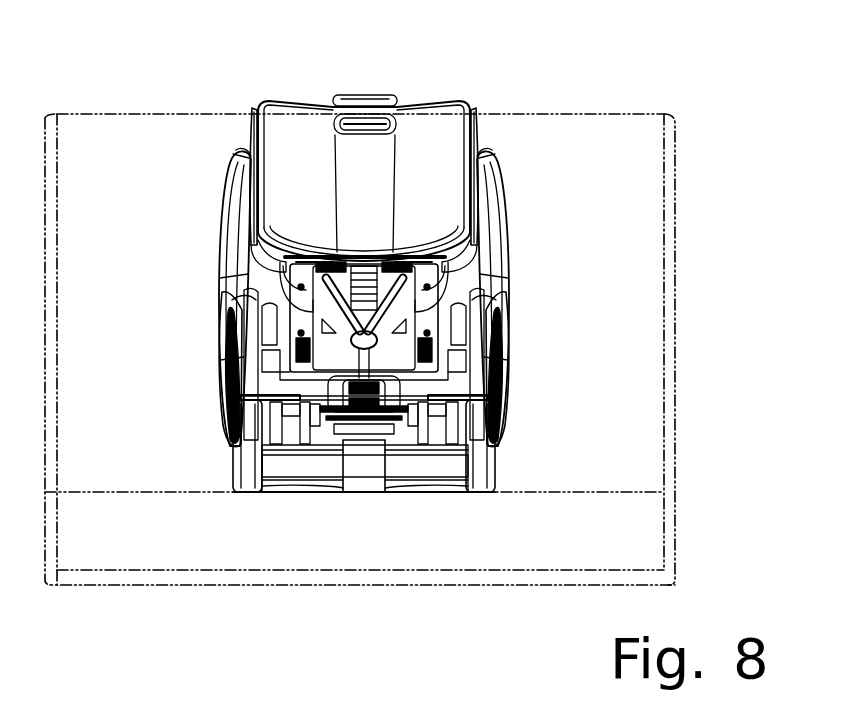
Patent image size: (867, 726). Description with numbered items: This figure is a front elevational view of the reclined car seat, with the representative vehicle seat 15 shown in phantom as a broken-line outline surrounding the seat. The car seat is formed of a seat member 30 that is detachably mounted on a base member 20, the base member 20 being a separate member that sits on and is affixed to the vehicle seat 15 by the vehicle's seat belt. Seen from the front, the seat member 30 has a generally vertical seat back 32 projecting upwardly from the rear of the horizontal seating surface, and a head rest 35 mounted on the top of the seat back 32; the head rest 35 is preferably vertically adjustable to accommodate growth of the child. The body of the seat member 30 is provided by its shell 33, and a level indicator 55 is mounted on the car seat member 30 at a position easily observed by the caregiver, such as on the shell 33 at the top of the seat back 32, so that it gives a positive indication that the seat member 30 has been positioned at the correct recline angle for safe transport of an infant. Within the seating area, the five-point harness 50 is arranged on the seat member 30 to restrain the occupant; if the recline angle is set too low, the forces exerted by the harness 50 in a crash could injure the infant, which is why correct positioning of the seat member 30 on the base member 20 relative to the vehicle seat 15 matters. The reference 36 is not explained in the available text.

The vehicle seat 15 is at (675, 325).
The base member 20 is at (495, 468).
The seat member 30 is at (217, 312).
The seat back 32 is at (403, 295).
The shell 33 is at (223, 187).
The head rest 35 is at (430, 113).
The headrest 36 is at (357, 95).
The five-point harness 50 is at (347, 342).
The level indicator 55 is at (243, 148).